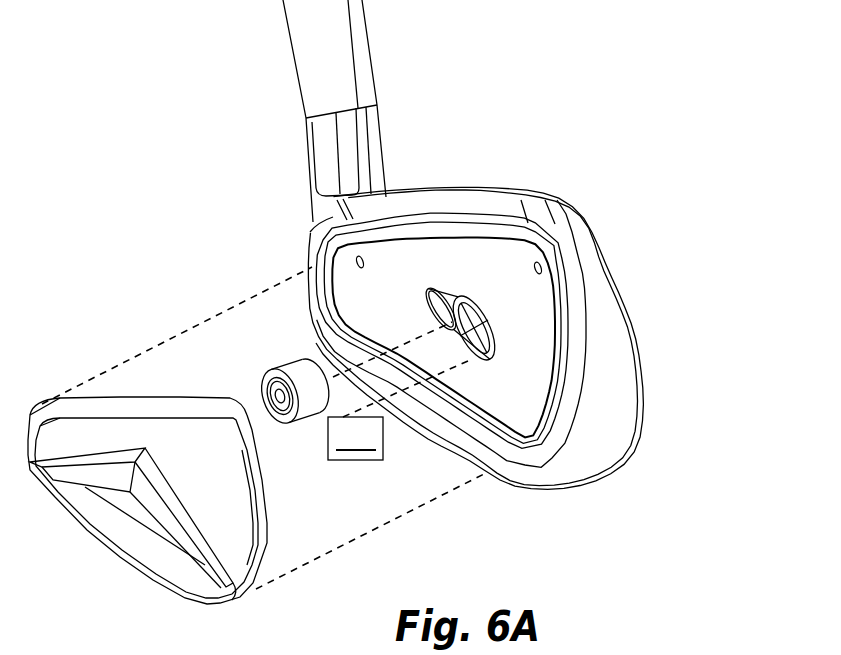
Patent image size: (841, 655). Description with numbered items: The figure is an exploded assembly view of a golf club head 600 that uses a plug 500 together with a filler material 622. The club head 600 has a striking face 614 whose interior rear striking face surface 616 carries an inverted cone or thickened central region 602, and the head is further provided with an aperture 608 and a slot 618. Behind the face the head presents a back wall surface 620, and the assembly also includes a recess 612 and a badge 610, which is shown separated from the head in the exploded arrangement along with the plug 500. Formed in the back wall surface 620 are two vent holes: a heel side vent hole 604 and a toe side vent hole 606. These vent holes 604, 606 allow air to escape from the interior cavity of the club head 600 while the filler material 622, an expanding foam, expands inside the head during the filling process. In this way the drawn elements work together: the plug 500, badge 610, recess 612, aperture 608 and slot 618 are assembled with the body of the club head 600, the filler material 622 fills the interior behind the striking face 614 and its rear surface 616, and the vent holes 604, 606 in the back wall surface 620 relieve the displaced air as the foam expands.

The club head 600 is at (652, 60).
The inverted cone or thickened central region 602 is at (493, 347).
The heel side vent hole 604 is at (323, 247).
The toe side vent hole 606 is at (541, 266).
The aperture 608 is at (495, 344).
The badge 610 is at (82, 430).
The recess 612 is at (512, 472).
The striking face 614 is at (650, 373).
The interior rear striking face surface 616 is at (490, 363).
The slot 618 is at (445, 292).
The back wall surface 620 is at (443, 252).
The filler material 622 is at (355, 438).
The plug 500 is at (258, 368).